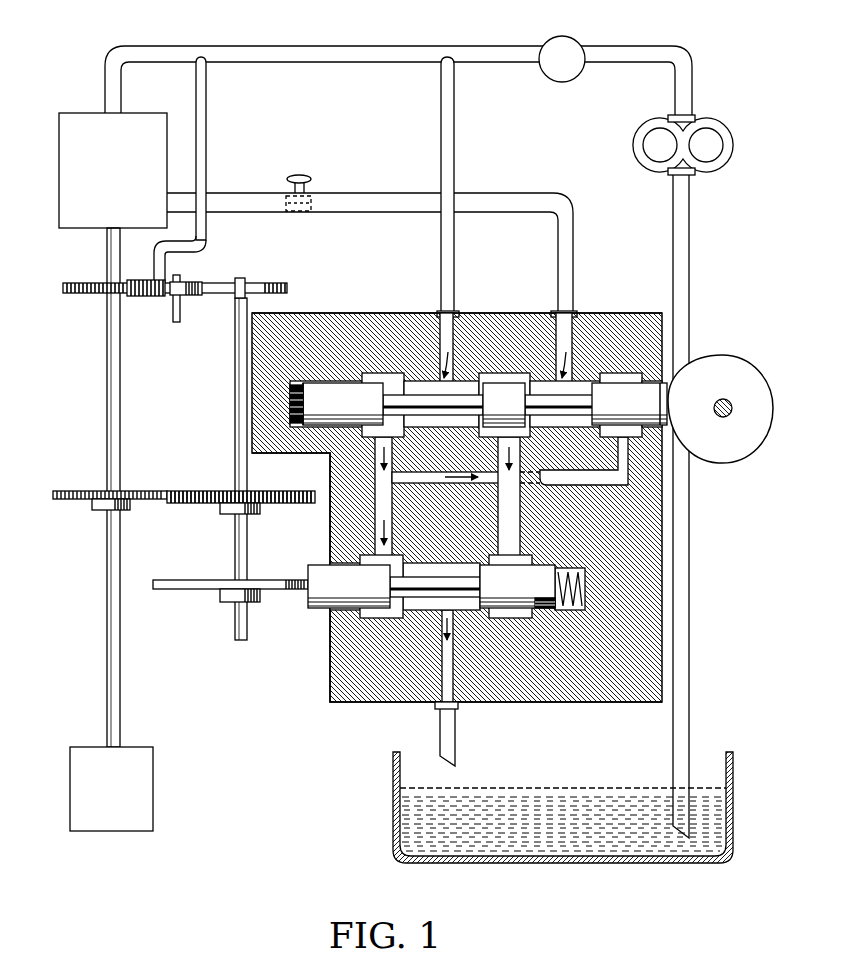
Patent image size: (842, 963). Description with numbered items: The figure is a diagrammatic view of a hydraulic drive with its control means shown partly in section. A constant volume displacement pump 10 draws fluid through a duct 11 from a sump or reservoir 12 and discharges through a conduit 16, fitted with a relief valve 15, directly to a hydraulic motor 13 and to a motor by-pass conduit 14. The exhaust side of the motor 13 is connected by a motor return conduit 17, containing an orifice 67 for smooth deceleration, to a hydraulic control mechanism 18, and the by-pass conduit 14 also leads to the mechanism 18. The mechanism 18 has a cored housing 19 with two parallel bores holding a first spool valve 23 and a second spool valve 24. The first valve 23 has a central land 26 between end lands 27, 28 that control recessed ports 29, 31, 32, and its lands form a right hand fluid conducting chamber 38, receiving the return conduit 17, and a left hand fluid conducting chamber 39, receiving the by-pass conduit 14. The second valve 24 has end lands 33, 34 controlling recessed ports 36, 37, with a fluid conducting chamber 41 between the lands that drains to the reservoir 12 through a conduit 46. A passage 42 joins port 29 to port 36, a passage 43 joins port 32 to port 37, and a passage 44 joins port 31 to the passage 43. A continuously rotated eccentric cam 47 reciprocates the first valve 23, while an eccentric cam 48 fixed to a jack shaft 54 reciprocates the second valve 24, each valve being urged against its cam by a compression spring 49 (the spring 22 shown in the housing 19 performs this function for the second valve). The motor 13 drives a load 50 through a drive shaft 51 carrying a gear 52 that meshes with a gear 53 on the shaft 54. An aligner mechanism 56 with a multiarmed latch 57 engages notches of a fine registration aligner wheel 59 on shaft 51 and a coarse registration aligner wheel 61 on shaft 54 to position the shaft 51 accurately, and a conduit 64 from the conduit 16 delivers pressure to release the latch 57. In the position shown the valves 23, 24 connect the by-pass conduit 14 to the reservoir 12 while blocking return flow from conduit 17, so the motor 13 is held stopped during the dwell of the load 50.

The constant volume displacement pump 10 is at (633, 149).
The duct 11 is at (690, 302).
The sump or reservoir 12 is at (393, 812).
The hydraulic motor 13 is at (59, 126).
The motor by-pass conduit 14 is at (440, 145).
The relief valve 15 is at (540, 46).
The conduit 16 is at (332, 47).
The motor return conduit 17 is at (558, 266).
The hydraulic control mechanism 18 is at (372, 311).
The cored housing 19 is at (364, 318).
The second cylindrical bore 22 is at (586, 605).
The first spool valve 23 is at (672, 382).
The second spool valve 24 is at (318, 560).
The central land 26 is at (539, 405).
The end land 27 is at (629, 404).
The end land 28 is at (306, 383).
The recessed port 29 is at (500, 373).
The recessed port 31 is at (621, 373).
The recessed port 32 is at (382, 373).
The end land 33 is at (517, 586).
The end land 34 is at (394, 586).
The recessed port 36 is at (518, 618).
The recessed port 37 is at (385, 615).
The right hand fluid conducting chamber 38 is at (578, 380).
The left hand fluid conducting chamber 39 is at (466, 380).
The fluid conducting chamber 41 is at (422, 605).
The fluid conducting passage 42 is at (520, 505).
The fluid conducting passage 43 is at (375, 477).
The fluid passage 44 is at (622, 474).
The conduit 46 is at (456, 719).
The eccentric cam 47 is at (735, 462).
The eccentric cam 48 is at (178, 590).
The compression spring 49 is at (295, 383).
The load or driven member 50 is at (153, 807).
The drive shaft 51 is at (121, 722).
The gear 52 is at (134, 490).
The gear 53 is at (186, 490).
The jack shaft 54 is at (247, 540).
The aligner mechanism 56 is at (151, 300).
The multiarmed latch 57 is at (195, 282).
The fine registration aligner wheel 59 is at (78, 283).
The coarse registration aligner wheel 61 is at (245, 279).
The conduit 64 is at (207, 134).
The orifice 67 is at (290, 193).